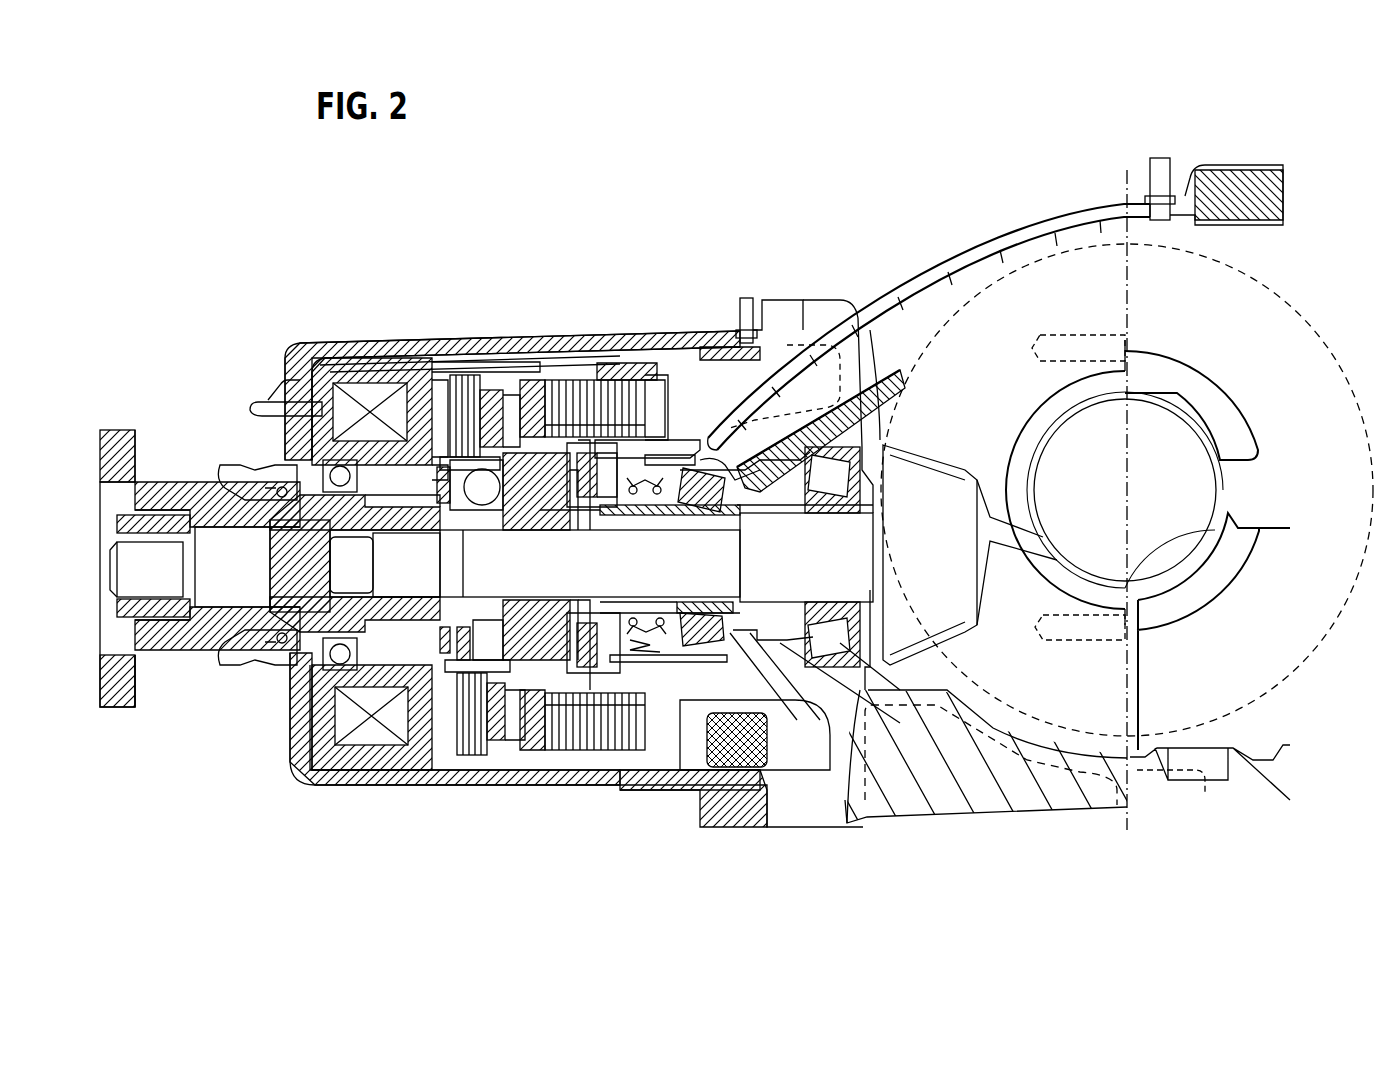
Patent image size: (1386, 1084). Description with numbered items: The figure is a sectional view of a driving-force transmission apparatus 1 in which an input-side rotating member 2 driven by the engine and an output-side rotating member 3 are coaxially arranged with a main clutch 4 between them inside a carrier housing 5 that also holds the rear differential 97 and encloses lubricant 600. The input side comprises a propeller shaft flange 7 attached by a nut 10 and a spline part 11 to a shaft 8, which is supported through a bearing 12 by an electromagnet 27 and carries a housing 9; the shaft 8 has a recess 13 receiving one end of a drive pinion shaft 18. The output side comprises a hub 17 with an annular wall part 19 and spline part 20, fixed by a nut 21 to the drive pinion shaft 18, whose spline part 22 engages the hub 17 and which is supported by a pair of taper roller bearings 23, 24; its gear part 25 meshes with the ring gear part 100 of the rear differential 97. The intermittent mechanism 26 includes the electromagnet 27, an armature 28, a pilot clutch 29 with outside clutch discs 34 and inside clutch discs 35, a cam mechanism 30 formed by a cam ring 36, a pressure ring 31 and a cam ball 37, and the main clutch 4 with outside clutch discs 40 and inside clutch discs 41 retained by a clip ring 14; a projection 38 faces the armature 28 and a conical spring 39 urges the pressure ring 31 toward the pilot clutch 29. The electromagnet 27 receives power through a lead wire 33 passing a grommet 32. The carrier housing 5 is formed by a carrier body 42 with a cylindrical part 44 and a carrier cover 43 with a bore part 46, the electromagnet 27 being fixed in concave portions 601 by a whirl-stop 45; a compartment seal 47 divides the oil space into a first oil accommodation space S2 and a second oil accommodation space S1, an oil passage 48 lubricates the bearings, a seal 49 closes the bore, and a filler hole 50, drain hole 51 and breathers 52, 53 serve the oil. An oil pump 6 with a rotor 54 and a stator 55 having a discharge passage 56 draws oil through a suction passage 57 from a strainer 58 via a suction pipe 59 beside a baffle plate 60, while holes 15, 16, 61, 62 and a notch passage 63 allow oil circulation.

The driving-force transmission apparatus 1 is at (752, 182).
The input-side rotating member 2 is at (197, 476).
The output-side rotating member 3 is at (402, 770).
The main clutch 4 is at (600, 372).
The carrier housing 5 is at (808, 294).
The oil pump 6 is at (570, 606).
The propeller shaft flange 7 is at (165, 655).
The shaft 8 is at (233, 568).
The housing 9 is at (492, 383).
The nut 10 is at (150, 540).
The spline part 11 is at (258, 568).
The bearing 12 is at (340, 492).
The recess 13 is at (306, 553).
The clip ring 14 is at (668, 378).
The hole 15 is at (440, 362).
The hole 16 is at (552, 376).
The hub 17 is at (486, 540).
The drive pinion shaft 18 is at (660, 558).
The wall part 19 is at (580, 510).
The spline part 20 is at (620, 462).
The nut 21 is at (395, 535).
The spline part 22 is at (503, 606).
The taper roller bearing 23 is at (706, 515).
The taper roller bearing 24 is at (832, 512).
The gear part 25 is at (940, 457).
The intermittent mechanism 26 is at (489, 300).
The electromagnet 27 is at (386, 340).
The armature 28 is at (475, 762).
The pilot clutch 29 is at (458, 785).
The cam mechanism 30 is at (486, 506).
The pressure ring 31 is at (512, 775).
The grommet 32 is at (283, 395).
The lead wire 33 is at (262, 405).
The outside clutch discs 34 is at (470, 365).
The inside clutch discs 35 is at (372, 462).
The cam ring 36 is at (440, 523).
The cam ball 37 is at (555, 508).
The projection 38 is at (497, 765).
The conical spring 39 is at (546, 606).
The outside clutch discs 40 is at (630, 347).
The inside clutch discs 41 is at (650, 398).
The carrier body 42 is at (850, 297).
The carrier cover 43 is at (778, 292).
The cylindrical part 44 is at (720, 400).
The whirl-stop 45 is at (332, 350).
The bore part 46 is at (290, 690).
The compartment seal 47 is at (648, 502).
The oil passage 48 is at (774, 500).
The seal 49 is at (240, 672).
The filler hole 50 is at (668, 338).
The drain hole 51 is at (575, 790).
The breather 52 is at (1160, 170).
The breather 53 is at (742, 298).
The rotor 54 is at (598, 624).
The stator 55 is at (642, 618).
The discharge passage 56 is at (780, 462).
The suction passage 57 is at (643, 664).
The strainer 58 is at (735, 772).
The suction pipe 59 is at (850, 800).
The baffle plate 60 is at (660, 775).
The hole 61 is at (515, 388).
The hole 62 is at (466, 372).
The notch passage 63 is at (345, 787).
The rear differential 97 is at (1042, 206).
The ring gear part 100 is at (1270, 262).
The lubricant 600 is at (700, 765).
The concave portions 601 is at (355, 345).
The second oil accommodation space S1 is at (770, 358).
The first oil accommodation space S2 is at (925, 305).